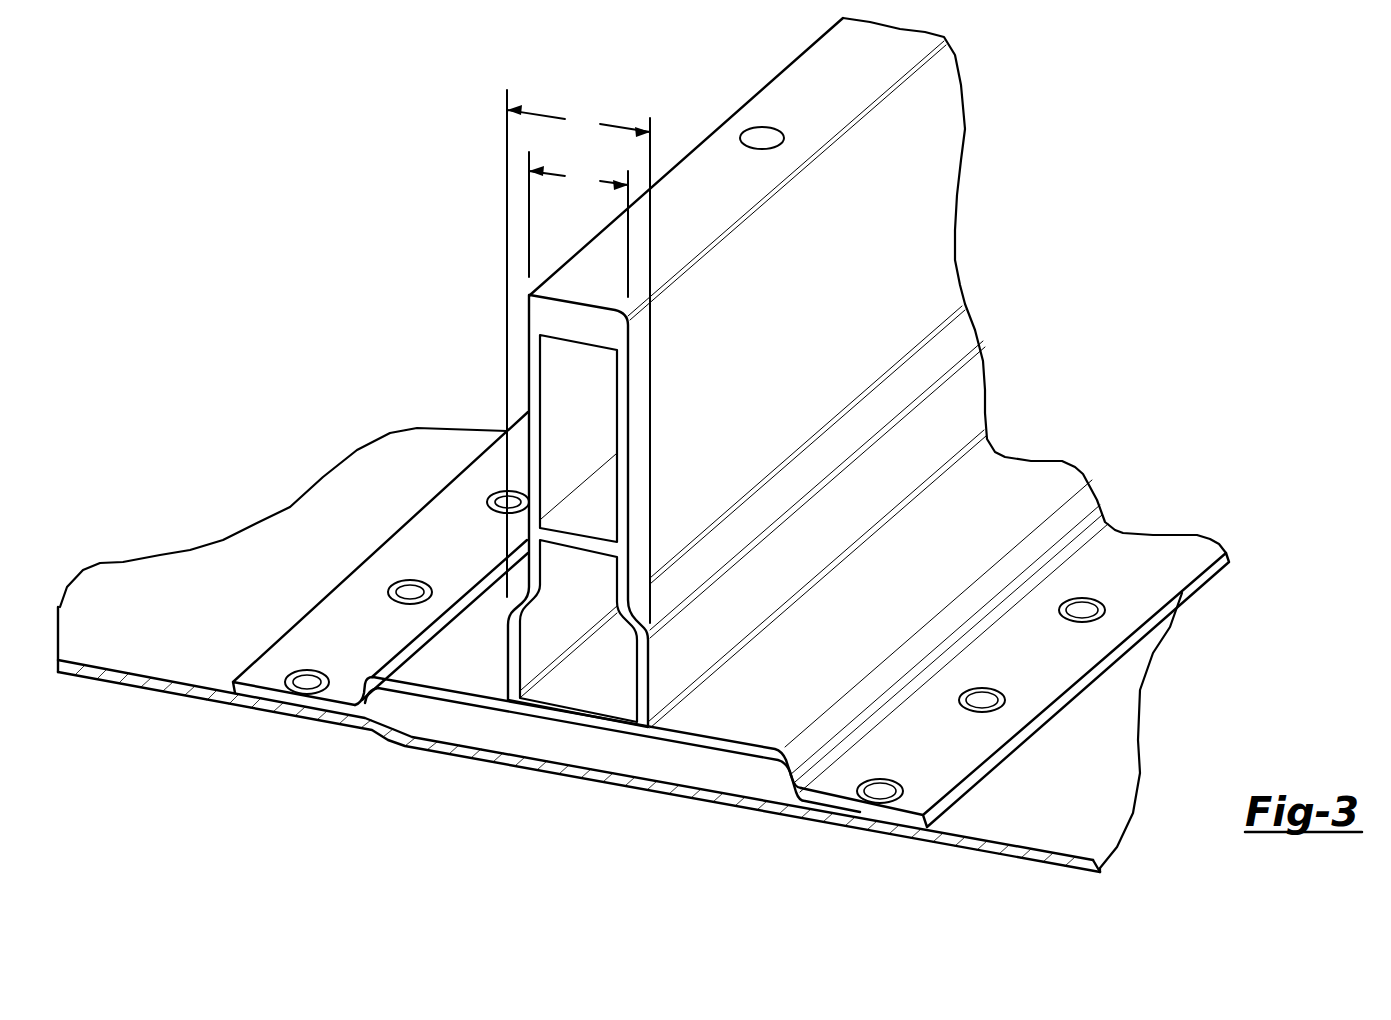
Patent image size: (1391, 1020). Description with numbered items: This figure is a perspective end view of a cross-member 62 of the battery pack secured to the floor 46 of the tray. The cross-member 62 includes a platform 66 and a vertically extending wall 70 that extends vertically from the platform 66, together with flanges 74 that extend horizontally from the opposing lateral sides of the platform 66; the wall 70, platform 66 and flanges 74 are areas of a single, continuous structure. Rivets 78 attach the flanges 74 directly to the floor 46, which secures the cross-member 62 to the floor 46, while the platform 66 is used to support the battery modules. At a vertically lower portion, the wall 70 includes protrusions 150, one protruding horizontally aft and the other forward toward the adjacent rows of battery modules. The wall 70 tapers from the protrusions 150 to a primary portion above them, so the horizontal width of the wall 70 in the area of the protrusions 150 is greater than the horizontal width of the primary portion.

The floor 46 is at (1083, 822).
The cross-member 62 is at (900, 219).
The platform 66 is at (753, 717).
The vertically extending wall 70 is at (665, 727).
The flange 74 is at (315, 637).
The rivet 78 is at (982, 700).
The protrusion 150 is at (724, 608).